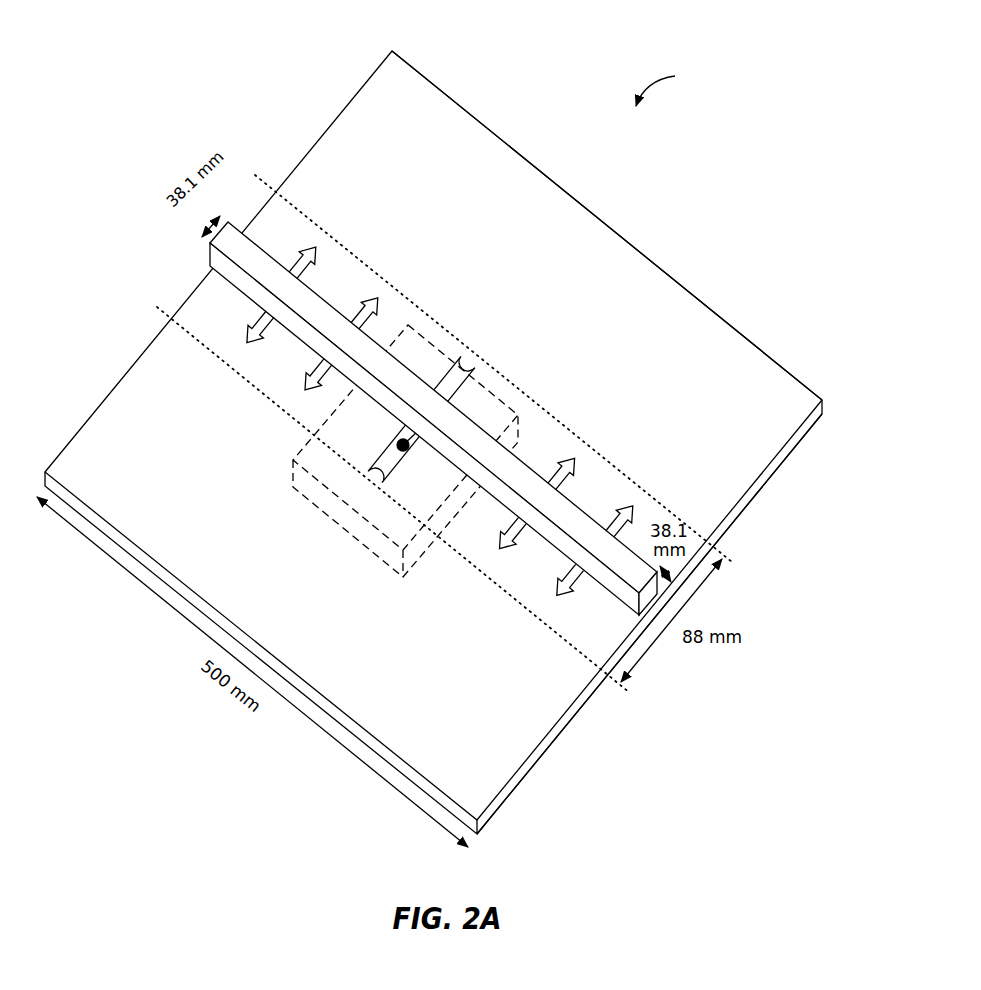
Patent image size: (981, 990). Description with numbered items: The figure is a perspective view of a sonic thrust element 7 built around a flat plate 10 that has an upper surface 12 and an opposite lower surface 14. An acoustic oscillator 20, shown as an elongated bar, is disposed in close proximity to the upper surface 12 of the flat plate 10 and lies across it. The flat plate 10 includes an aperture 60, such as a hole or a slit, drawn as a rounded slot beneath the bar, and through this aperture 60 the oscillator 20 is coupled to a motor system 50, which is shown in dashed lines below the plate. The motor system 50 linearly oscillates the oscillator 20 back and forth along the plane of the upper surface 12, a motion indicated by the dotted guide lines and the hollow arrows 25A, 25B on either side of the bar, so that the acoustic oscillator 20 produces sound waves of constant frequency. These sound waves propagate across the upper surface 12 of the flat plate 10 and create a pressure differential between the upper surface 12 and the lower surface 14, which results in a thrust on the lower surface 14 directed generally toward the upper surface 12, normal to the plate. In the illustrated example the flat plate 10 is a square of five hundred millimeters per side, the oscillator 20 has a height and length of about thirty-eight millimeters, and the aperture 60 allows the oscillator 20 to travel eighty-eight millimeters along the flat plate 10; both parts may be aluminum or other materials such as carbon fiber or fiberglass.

The sonic thrust element 7 is at (666, 88).
The flat plate 10 is at (540, 747).
The upper surface 12 is at (753, 368).
The lower surface 14 is at (747, 506).
The acoustic oscillator 20 is at (620, 566).
The force direction arrows (first side) 25A is at (262, 328).
The force direction arrows (second side) 25B is at (306, 246).
The motor system 50 is at (507, 402).
The aperture 60 is at (477, 353).